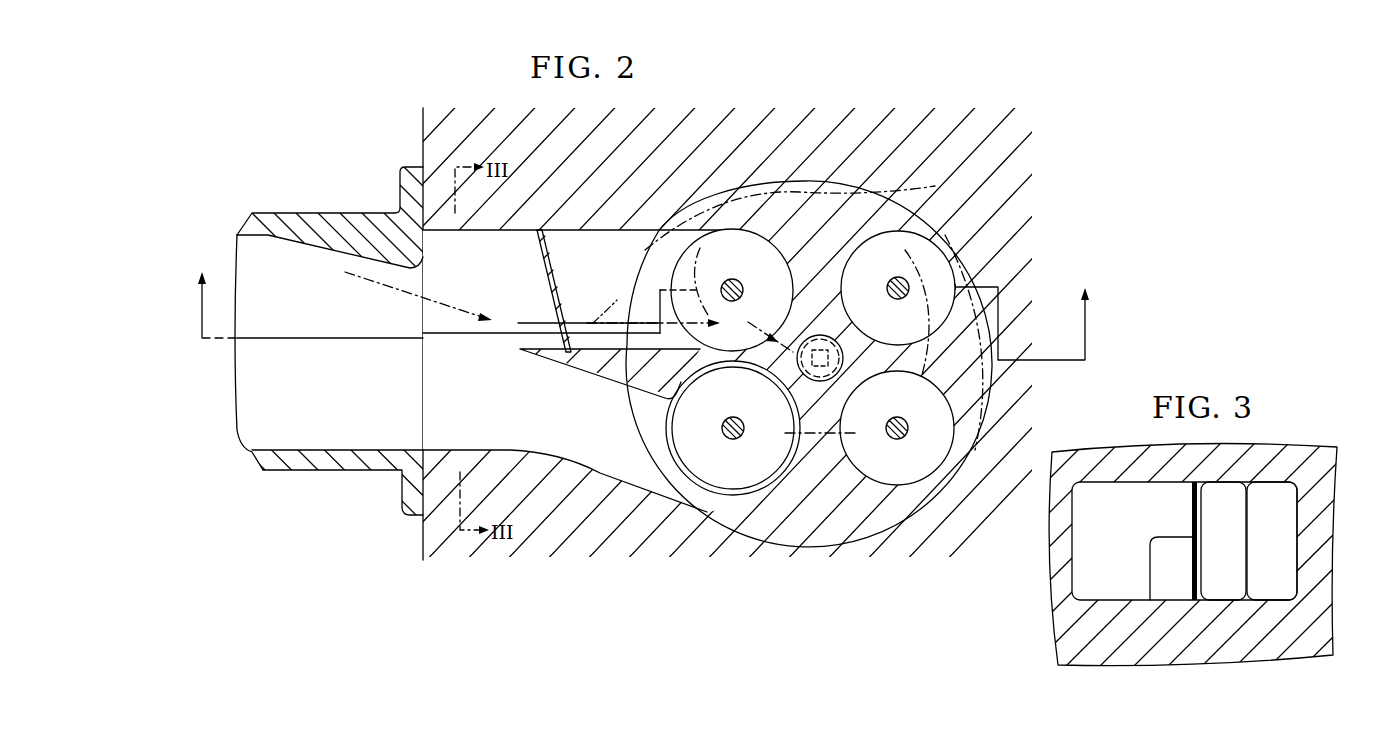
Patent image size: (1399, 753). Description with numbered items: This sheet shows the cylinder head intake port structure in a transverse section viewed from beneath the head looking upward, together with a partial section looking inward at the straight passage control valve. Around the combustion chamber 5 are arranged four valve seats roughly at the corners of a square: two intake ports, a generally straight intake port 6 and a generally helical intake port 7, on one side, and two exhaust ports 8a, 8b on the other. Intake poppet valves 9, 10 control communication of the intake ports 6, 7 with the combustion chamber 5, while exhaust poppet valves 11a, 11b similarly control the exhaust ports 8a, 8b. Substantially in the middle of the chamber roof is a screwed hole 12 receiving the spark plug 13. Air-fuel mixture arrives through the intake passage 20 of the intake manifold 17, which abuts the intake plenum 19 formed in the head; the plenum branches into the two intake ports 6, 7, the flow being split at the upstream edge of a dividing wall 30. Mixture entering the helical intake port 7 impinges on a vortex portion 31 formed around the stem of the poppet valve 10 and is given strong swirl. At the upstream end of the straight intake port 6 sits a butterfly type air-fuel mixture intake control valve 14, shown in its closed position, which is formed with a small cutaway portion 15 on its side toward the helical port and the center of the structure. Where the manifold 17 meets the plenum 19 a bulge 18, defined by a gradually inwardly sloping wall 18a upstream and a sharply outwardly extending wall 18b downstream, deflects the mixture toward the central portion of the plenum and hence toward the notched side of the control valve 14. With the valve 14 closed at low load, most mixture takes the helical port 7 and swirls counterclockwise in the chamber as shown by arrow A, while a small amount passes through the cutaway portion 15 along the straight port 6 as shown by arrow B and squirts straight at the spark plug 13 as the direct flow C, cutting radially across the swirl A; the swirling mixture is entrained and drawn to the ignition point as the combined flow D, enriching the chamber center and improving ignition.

In FIG. 2, the combustion chamber 5 is at (1015, 360).
In FIG. 2, the intake port 6 is at (697, 228).
In FIG. 3, the intake port 6 is at (1087, 537).
In FIG. 2, the intake port 7 is at (602, 453).
In FIG. 3, the intake port 7 is at (1270, 538).
In FIG. 2, the exhaust port 8a is at (998, 287).
In FIG. 2, the exhaust port 8b is at (937, 447).
In FIG. 2, the poppet valve 9 is at (740, 282).
In FIG. 2, the poppet valve 10 is at (742, 435).
In FIG. 2, the poppet valve 11a is at (907, 275).
In FIG. 2, the poppet valve 11b is at (902, 420).
In FIG. 2, the screwed hole 12 is at (820, 335).
In FIG. 2, the spark plug 13 is at (828, 358).
In FIG. 2, the air-fuel mixture intake control valve 14 is at (557, 267).
In FIG. 3, the air-fuel mixture intake control valve 14 is at (1115, 572).
In FIG. 2, the cutaway portion 15 is at (563, 313).
In FIG. 3, the cutaway portion 15 is at (1172, 577).
In FIG. 2, the intake manifold 17 is at (318, 462).
In FIG. 2, the bulge 18 is at (393, 250).
In FIG. 2, the gradually inwardly sloping wall 18a is at (345, 248).
In FIG. 2, the sharply outwardly extending wall 18b is at (423, 253).
In FIG. 2, the intake plenum 19 is at (443, 387).
In FIG. 2, the intake passage 20 is at (278, 275).
In FIG. 2, the dividing wall 30 is at (563, 357).
In FIG. 3, the dividing wall 30 is at (1198, 562).
In FIG. 2, the vortex portion 31 is at (670, 428).
In FIG. 2, the swirling flow A is at (799, 210).
In FIG. 2, the flow through notched portion B is at (653, 303).
In FIG. 2, the direct flow C is at (660, 300).
In FIG. 2, the combined flow D is at (748, 335).